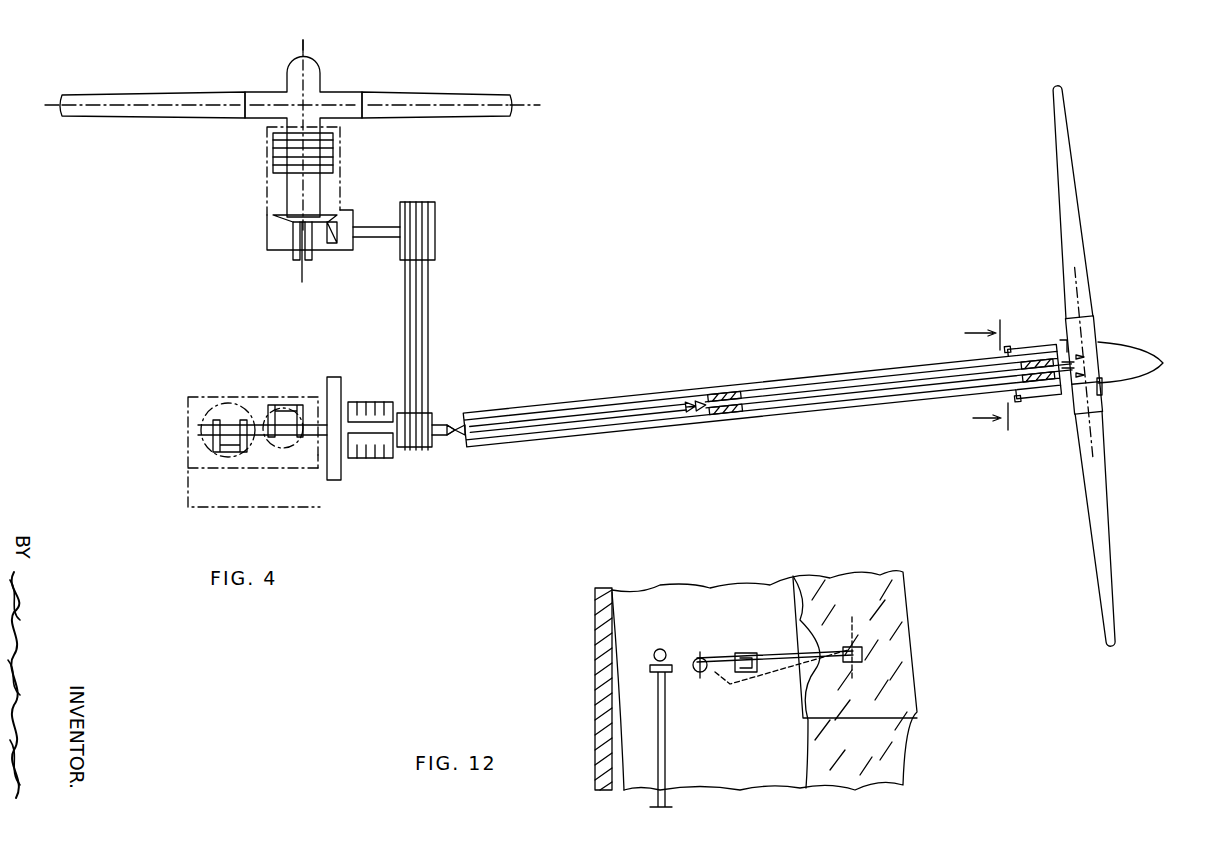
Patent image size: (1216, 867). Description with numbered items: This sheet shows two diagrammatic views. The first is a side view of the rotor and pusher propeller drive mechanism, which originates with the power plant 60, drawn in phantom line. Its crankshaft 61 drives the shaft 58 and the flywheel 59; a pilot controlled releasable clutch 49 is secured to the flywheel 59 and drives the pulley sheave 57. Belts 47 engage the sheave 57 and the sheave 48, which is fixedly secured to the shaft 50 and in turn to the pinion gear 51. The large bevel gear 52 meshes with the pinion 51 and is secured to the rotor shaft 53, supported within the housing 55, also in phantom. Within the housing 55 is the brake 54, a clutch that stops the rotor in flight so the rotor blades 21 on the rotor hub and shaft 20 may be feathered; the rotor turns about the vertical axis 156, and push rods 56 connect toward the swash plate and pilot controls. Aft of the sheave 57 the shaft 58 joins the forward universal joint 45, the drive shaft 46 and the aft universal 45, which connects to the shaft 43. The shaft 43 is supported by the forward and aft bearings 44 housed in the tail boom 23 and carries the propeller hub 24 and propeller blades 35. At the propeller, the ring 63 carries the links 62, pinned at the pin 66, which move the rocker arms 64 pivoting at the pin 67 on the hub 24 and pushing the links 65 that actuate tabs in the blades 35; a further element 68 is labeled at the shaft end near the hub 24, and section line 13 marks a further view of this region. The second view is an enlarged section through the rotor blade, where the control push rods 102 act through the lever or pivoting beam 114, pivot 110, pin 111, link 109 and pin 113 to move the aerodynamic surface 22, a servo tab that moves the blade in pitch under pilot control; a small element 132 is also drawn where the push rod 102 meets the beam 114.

In FIG. 4, the vertical axis 156 is at (306, 50).
In FIG. 4, the rotor hub and shaft 20 is at (322, 82).
In FIG. 4, the rotor blades 21 is at (91, 97).
In FIG. 4, the brake 54 is at (340, 155).
In FIG. 4, the rotor shaft 53 is at (270, 192).
In FIG. 4, the housing 55 is at (342, 197).
In FIG. 4, the large bevel gear 52 is at (270, 224).
In FIG. 4, the push rods 56 is at (292, 256).
In FIG. 4, the pinion gear 51 is at (331, 248).
In FIG. 4, the shaft 50 is at (386, 237).
In FIG. 4, the sheave 48 is at (437, 215).
In FIG. 4, the belts 47 is at (430, 298).
In FIG. 4, the pulley sheave 57 is at (432, 412).
In FIG. 4, the releasable clutch 49 is at (380, 400).
In FIG. 4, the flywheel 59 is at (337, 480).
In FIG. 4, the power plant 60 is at (195, 482).
In FIG. 4, the crankshaft 61 is at (200, 432).
In FIG. 4, the shaft 58 is at (318, 470).
In FIG. 4, the tail boom 23 is at (770, 380).
In FIG. 4, the drive shaft 46 is at (612, 420).
In FIG. 4, the universal joint 45 is at (470, 438).
In FIG. 4, the bearings 44 is at (725, 418).
In FIG. 4, the shaft 43 is at (840, 398).
In FIG. 4, the section line 13 is at (968, 385).
In FIG. 4, the links 62 is at (1040, 350).
In FIG. 4, the ring 63 is at (1008, 345).
In FIG. 4, the pin 66 is at (1062, 340).
In FIG. 4, the propeller blades 35 is at (1070, 177).
In FIG. 4, the links 65 is at (1098, 323).
In FIG. 4, the rocker arms 64 is at (1103, 396).
In FIG. 4, the pin 67 is at (1090, 350).
In FIG. 4, the shaft end 68 is at (1080, 355).
In FIG. 4, the propeller hub 24 is at (1160, 362).
In FIG. 12, the aerodynamic surface 22 is at (905, 650).
In FIG. 12, the pin 113 is at (857, 632).
In FIG. 12, the pin 111 is at (740, 645).
In FIG. 12, the link 109 is at (805, 630).
In FIG. 12, the pivot 110 is at (712, 648).
In FIG. 12, the ball 132 is at (654, 654).
In FIG. 12, the control push rods 102 is at (656, 688).
In FIG. 12, the pivoting beam 114 is at (678, 640).